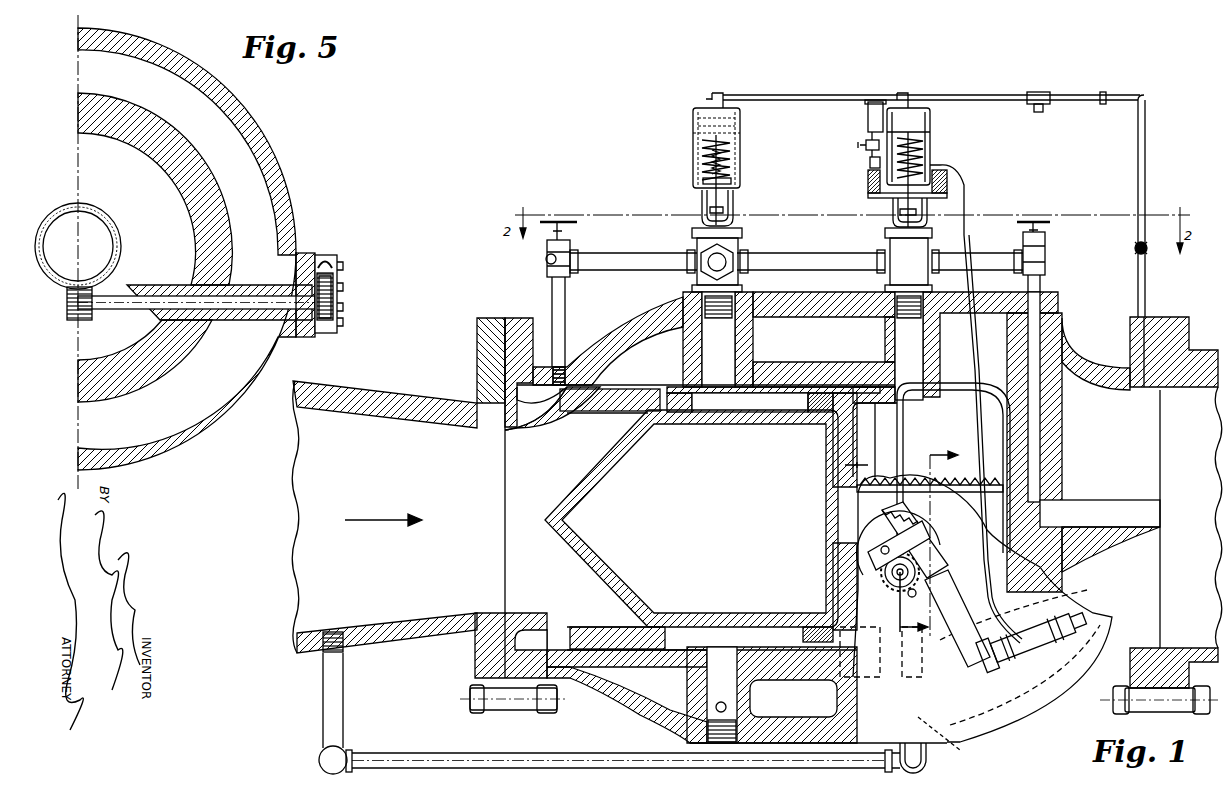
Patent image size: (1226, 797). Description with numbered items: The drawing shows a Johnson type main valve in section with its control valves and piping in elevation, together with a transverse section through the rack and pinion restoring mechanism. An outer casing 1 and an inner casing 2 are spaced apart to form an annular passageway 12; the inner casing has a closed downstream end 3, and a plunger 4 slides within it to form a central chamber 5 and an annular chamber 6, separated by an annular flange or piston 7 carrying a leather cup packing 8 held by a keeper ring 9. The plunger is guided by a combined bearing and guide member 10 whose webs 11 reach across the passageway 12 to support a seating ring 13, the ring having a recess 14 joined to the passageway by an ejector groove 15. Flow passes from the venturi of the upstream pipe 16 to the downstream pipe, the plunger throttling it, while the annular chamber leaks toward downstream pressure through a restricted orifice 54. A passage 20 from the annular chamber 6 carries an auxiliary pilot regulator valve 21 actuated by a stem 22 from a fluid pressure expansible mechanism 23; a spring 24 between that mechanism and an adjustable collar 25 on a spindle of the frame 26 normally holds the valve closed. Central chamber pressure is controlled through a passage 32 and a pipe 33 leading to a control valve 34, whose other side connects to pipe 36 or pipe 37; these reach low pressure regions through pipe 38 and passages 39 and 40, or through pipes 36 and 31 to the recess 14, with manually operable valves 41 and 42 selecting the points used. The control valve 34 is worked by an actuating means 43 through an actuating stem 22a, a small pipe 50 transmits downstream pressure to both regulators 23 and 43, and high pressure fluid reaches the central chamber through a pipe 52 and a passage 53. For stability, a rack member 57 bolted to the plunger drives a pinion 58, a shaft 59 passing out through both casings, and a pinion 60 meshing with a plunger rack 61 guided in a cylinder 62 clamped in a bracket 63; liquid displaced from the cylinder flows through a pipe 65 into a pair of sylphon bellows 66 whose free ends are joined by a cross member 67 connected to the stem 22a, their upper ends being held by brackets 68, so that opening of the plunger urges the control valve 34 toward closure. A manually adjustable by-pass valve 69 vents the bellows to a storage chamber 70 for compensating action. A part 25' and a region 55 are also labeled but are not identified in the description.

In FIG. 5, the outer casing 1 is at (280, 168).
In FIG. 5, the inner casing 2 is at (212, 196).
In FIG. 1, the inner casing 2 is at (812, 368).
In FIG. 1, the closed downstream end 3 is at (1062, 594).
In FIG. 1, the plunger 4 is at (712, 448).
In FIG. 1, the central chamber 5 is at (953, 468).
In FIG. 1, the annular chamber 6 is at (706, 398).
In FIG. 1, the annular flange or piston 7 is at (858, 410).
In FIG. 1, the leather cup packing 8 is at (826, 432).
In FIG. 1, the annular keeper ring 9 is at (808, 400).
In FIG. 1, the combined bearing and guide member 10 is at (668, 380).
In FIG. 1, the webs 11 is at (630, 370).
In FIG. 1, the annular passageway 12 is at (546, 415).
In FIG. 1, the seating ring 13 is at (535, 425).
In FIG. 1, the recess 14 is at (542, 395).
In FIG. 1, the ejector groove 15 is at (588, 392).
In FIG. 1, the upstream pipe 16 is at (398, 498).
In FIG. 1, the passage 20 is at (718, 339).
In FIG. 1, the auxiliary pilot regulator valve 21 is at (740, 246).
In FIG. 1, the valve stem 22 is at (725, 210).
In FIG. 1, the actuating stem 22a is at (925, 152).
In FIG. 1, the fluid pressure expansible mechanism 23 is at (737, 128).
In FIG. 1, the spring 24 is at (731, 156).
In FIG. 1, the adjustable collar 25 is at (738, 182).
In FIG. 1, the inner spring 25' is at (741, 162).
In FIG. 1, the frame 26 is at (704, 208).
In FIG. 1, the pipe 31 is at (565, 312).
In FIG. 1, the passage 32 is at (896, 348).
In FIG. 1, the pipe 33 is at (890, 270).
In FIG. 1, the control valve 34 is at (932, 236).
In FIG. 1, the pipe 36 is at (636, 258).
In FIG. 1, the pipe 37 is at (1001, 260).
In FIG. 1, the pipe 38 is at (1041, 286).
In FIG. 1, the passage 39 is at (1048, 345).
In FIG. 1, the passage 40 is at (1160, 508).
In FIG. 1, the manually operable valve 41 is at (570, 232).
In FIG. 1, the manually operable valve 42 is at (1045, 245).
In FIG. 1, the fluid pressure actuating means 43 is at (928, 128).
In FIG. 1, the small pipe 50 is at (1146, 160).
In FIG. 1, the pipe 52 is at (570, 757).
In FIG. 1, the passage 53 is at (948, 741).
In FIG. 1, the restricted orifice 54 is at (734, 698).
In FIG. 1, the chamber 55 is at (702, 672).
In FIG. 5, the rack member 57 is at (115, 242).
In FIG. 1, the rack member 57 is at (926, 476).
In FIG. 5, the pinion 58 is at (78, 316).
In FIG. 5, the shaft 59 is at (110, 296).
In FIG. 1, the shaft 59 is at (900, 605).
In FIG. 5, the pinion 60 is at (330, 322).
In FIG. 1, the pinion 60 is at (890, 590).
In FIG. 5, the plunger rack 61 is at (337, 290).
In FIG. 1, the plunger rack 61 is at (928, 514).
In FIG. 5, the cylinder 62 is at (337, 262).
In FIG. 1, the cylinder 62 is at (958, 615).
In FIG. 5, the bracket 63 is at (333, 262).
In FIG. 1, the bracket 63 is at (942, 548).
In FIG. 1, the pipe 65 is at (1006, 648).
In FIG. 1, the sylphon bellows 66 is at (868, 188).
In FIG. 1, the cross member 67 is at (925, 203).
In FIG. 1, the brackets 68 is at (870, 172).
In FIG. 1, the by-pass valve 69 is at (866, 151).
In FIG. 1, the storage chamber 70 is at (868, 122).